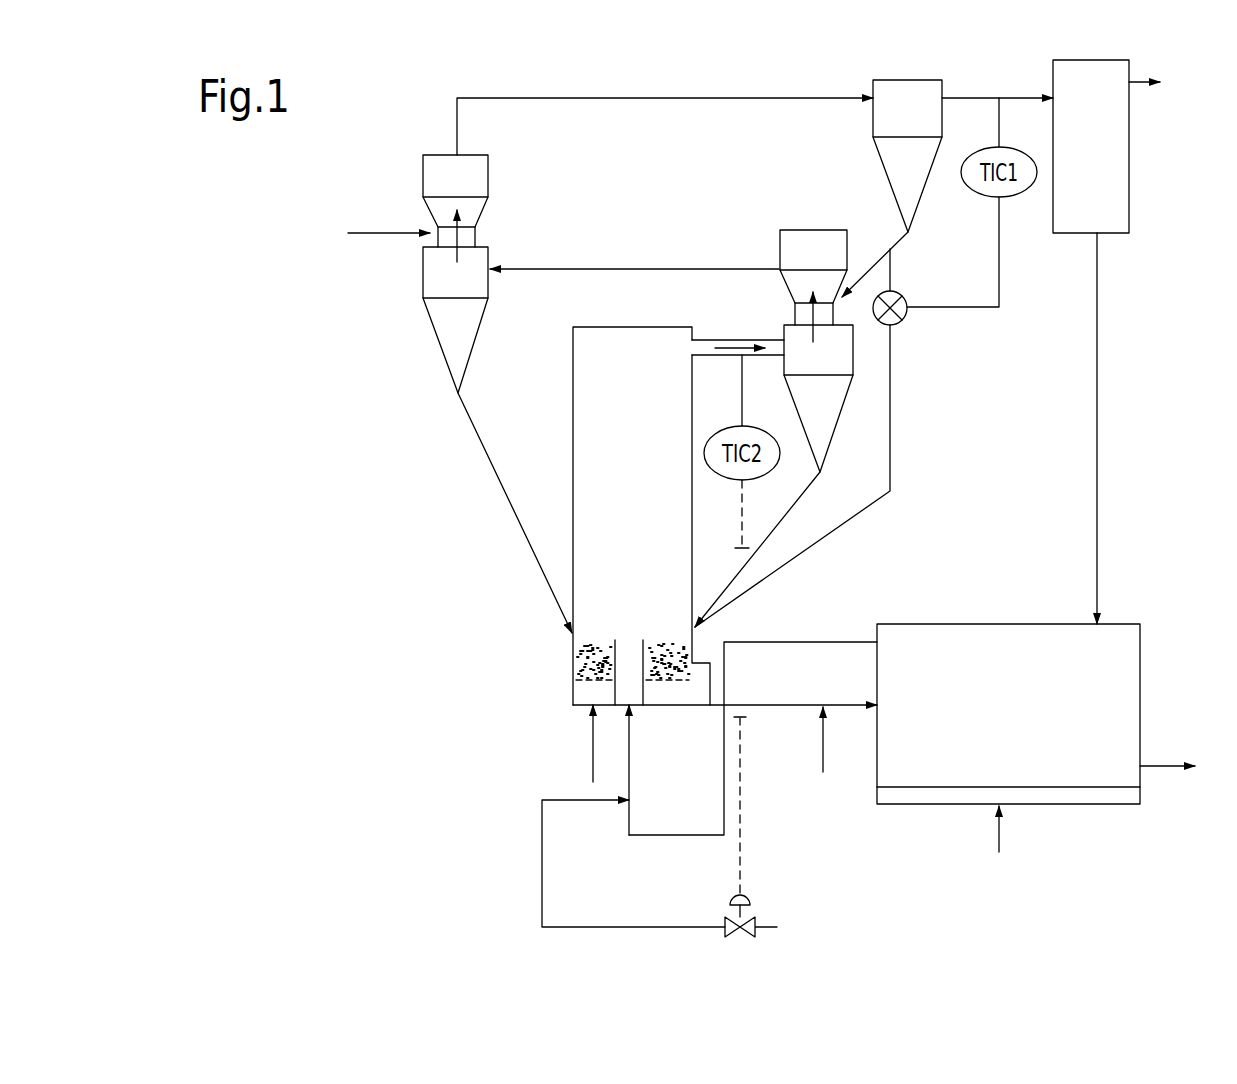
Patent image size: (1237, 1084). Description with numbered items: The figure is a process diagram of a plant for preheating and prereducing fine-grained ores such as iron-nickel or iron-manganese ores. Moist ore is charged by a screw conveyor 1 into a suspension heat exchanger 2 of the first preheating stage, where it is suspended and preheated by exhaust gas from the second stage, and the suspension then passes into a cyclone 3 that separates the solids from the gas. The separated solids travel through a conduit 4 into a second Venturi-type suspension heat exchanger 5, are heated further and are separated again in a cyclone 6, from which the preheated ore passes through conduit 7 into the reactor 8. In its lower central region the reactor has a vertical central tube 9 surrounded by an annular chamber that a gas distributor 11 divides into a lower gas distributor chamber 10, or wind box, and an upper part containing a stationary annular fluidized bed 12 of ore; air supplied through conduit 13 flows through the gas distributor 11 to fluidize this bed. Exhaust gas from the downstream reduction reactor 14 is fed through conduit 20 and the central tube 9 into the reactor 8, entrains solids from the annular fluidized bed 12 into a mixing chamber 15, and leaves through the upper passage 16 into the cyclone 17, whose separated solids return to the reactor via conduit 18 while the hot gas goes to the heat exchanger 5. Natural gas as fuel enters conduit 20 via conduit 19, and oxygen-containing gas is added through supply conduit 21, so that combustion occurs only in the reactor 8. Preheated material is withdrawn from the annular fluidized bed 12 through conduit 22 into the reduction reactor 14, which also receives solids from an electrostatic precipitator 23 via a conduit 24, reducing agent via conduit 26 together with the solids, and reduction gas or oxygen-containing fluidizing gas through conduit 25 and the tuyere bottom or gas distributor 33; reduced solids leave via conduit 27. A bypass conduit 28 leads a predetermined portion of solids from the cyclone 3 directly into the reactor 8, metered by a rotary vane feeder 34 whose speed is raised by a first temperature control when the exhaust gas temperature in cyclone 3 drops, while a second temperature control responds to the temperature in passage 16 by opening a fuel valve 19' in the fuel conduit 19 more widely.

The screw conveyor 1 is at (373, 233).
The suspension heat exchanger 2 is at (437, 180).
The cyclone 3 is at (927, 97).
The conduit 4 is at (902, 242).
The second Venturi-type suspension heat exchanger 5 is at (838, 252).
The cyclone 6 is at (443, 327).
The conduit 7 is at (487, 458).
The reactor 8 is at (566, 451).
The central tube 9 is at (698, 642).
The gas distributor chamber 10 is at (582, 697).
The gas distributor 11 is at (582, 678).
The annular fluidized bed 12 is at (600, 657).
The conduit 13 is at (590, 760).
The reduction reactor 14 is at (1148, 702).
The mixing chamber 15 is at (595, 567).
The upper passage 16 is at (693, 347).
The cyclone 17 is at (843, 350).
The conduit 18 is at (787, 515).
The conduit 19 is at (633, 863).
The fuel valve 19' is at (761, 827).
The conduit 20 is at (672, 837).
The supply conduit 21 is at (633, 744).
The conduit 22 is at (783, 707).
The electrostatic precipitator 23 is at (1120, 175).
The conduit 24 is at (1097, 287).
The conduit 25 is at (1000, 830).
The conduit 26 is at (824, 757).
The conduit 27 is at (1160, 768).
The bypass conduit 28 is at (892, 407).
The tuyere bottom or gas distributor 33 is at (1088, 788).
The rotary vane feeder 34 is at (908, 315).